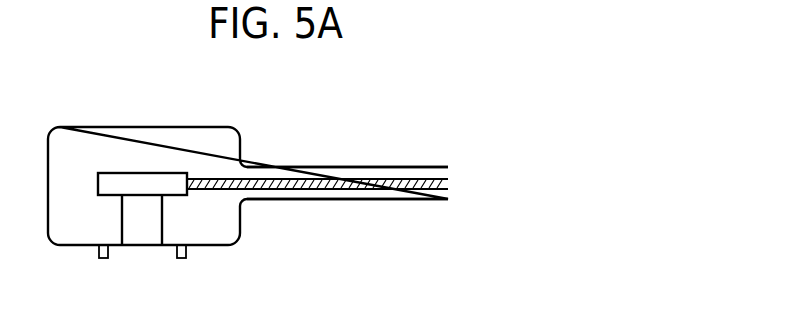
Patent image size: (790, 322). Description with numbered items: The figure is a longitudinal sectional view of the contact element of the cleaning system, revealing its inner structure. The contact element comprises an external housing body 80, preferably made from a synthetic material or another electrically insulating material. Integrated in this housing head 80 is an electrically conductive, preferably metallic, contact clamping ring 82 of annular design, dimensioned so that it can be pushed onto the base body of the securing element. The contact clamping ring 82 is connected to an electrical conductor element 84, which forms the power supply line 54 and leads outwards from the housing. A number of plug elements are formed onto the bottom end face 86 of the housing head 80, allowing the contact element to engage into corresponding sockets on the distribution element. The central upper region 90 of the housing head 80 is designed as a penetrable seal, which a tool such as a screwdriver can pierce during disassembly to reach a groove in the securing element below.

The housing body 80 is at (213, 140).
The contact clamping ring 82 is at (110, 187).
The electrical conductor element 84 is at (377, 176).
The bottom end face 86 is at (210, 245).
The central upper region 90 is at (165, 147).
The power supply line 54 is at (320, 176).